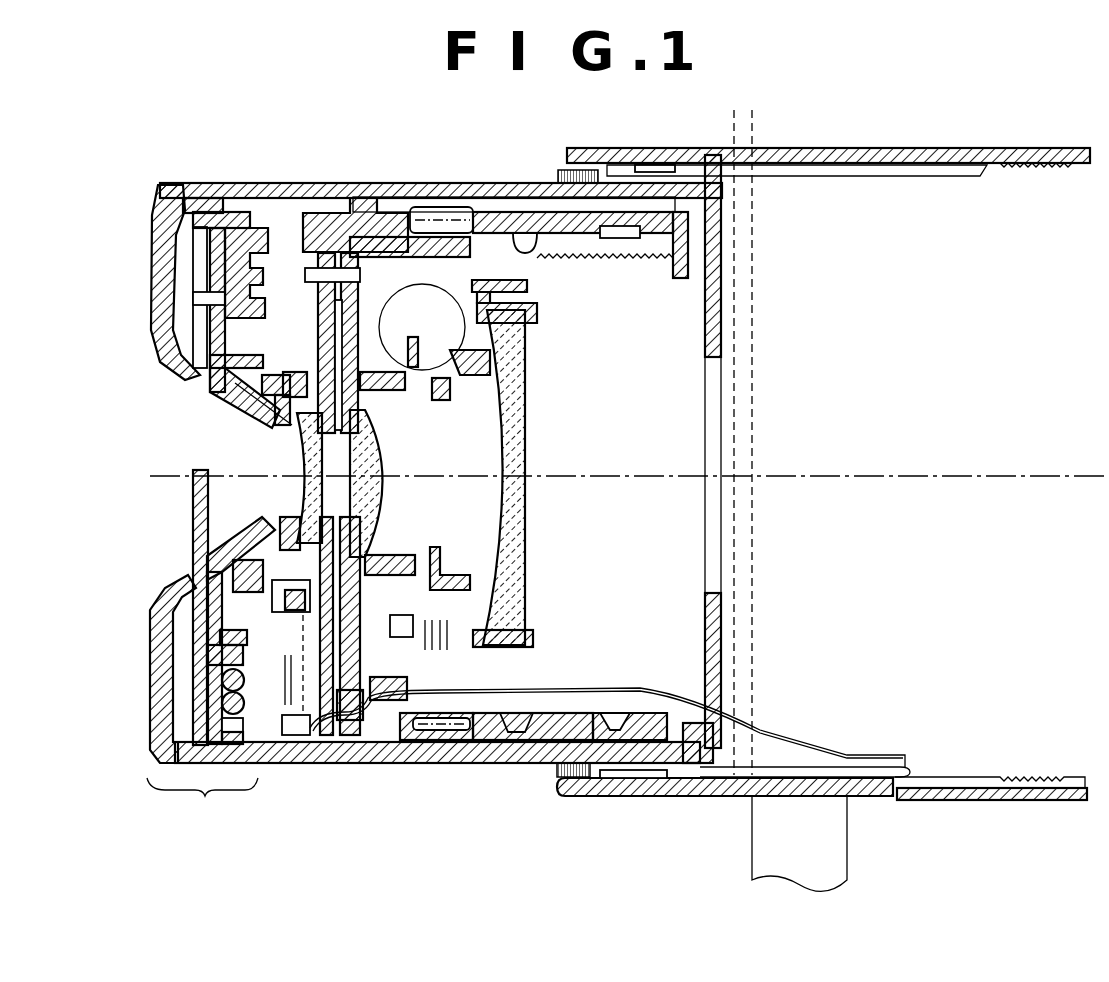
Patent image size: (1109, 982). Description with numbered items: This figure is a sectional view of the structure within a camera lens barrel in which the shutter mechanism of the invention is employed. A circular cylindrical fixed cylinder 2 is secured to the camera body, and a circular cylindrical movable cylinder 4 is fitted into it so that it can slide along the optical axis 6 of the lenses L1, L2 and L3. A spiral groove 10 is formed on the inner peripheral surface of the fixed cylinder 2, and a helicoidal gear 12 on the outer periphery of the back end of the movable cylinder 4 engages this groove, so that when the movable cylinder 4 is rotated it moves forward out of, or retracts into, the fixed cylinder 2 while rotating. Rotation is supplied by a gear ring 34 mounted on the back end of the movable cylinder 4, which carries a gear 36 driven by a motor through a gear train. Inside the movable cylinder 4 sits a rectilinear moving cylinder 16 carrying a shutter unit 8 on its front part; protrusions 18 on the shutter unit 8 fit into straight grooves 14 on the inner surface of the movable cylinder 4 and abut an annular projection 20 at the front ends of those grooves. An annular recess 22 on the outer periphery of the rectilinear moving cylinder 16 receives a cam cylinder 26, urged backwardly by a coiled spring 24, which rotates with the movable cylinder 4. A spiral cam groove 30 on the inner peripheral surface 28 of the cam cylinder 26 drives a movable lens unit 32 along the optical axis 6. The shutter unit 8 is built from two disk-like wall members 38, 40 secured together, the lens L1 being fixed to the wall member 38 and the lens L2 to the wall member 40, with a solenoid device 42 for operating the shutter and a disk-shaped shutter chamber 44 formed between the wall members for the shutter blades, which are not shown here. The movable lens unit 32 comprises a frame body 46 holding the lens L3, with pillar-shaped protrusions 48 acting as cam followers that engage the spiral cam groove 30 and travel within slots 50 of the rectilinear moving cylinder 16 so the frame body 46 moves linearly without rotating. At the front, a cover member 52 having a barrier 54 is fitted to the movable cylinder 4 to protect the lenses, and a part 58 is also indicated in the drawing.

The fixed cylinder 2 is at (933, 148).
The movable cylinder 4 is at (490, 195).
The optical axis 6 is at (170, 470).
The shutter unit 8 is at (296, 220).
The spiral groove 10 is at (916, 177).
The helicoidal gear 12 is at (660, 165).
The straight grooves 14 is at (455, 200).
The rectilinear moving cylinder 16 is at (612, 690).
The protrusions 18 is at (365, 245).
The annular projection 20 is at (303, 748).
The annular recess 22 is at (432, 212).
The coiled spring 24 is at (432, 740).
The cam cylinder 26 is at (565, 713).
The inner peripheral surface 28 is at (585, 245).
The spiral cam groove 30 is at (615, 232).
The movable lens unit 32 is at (550, 342).
The gear ring 34 is at (680, 782).
The gear 36 is at (702, 790).
The wall member 38 is at (318, 340).
The wall member 40 is at (363, 637).
The solenoid device 42 is at (446, 306).
The shutter chamber 44 is at (340, 352).
The frame body 46 is at (532, 632).
The pillar-shaped protrusions 48 is at (525, 240).
The slots 50 is at (680, 250).
The cover member 52 is at (228, 516).
The barrier 54 is at (193, 530).
The lens spacer 58 is at (333, 463).
The lens L1 is at (297, 455).
The lens L2 is at (385, 462).
The lens L3 is at (527, 440).